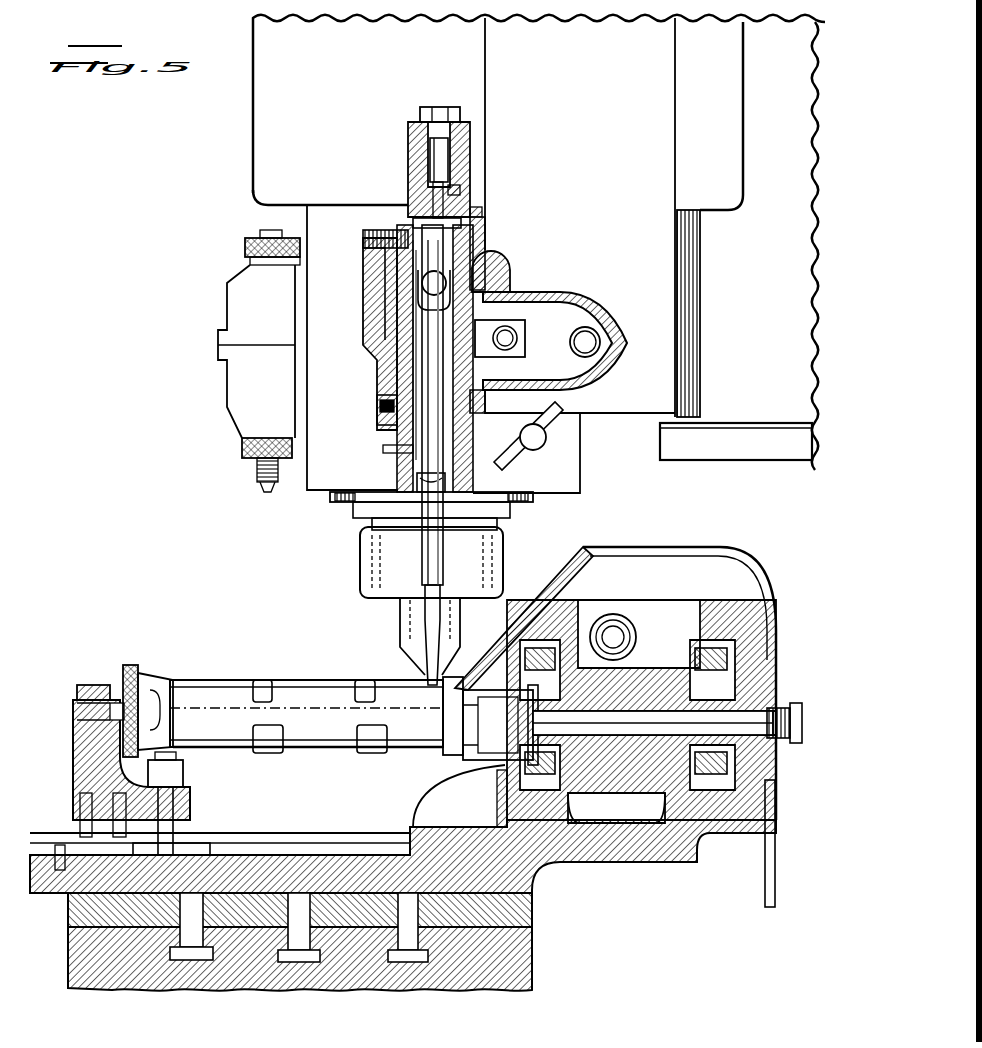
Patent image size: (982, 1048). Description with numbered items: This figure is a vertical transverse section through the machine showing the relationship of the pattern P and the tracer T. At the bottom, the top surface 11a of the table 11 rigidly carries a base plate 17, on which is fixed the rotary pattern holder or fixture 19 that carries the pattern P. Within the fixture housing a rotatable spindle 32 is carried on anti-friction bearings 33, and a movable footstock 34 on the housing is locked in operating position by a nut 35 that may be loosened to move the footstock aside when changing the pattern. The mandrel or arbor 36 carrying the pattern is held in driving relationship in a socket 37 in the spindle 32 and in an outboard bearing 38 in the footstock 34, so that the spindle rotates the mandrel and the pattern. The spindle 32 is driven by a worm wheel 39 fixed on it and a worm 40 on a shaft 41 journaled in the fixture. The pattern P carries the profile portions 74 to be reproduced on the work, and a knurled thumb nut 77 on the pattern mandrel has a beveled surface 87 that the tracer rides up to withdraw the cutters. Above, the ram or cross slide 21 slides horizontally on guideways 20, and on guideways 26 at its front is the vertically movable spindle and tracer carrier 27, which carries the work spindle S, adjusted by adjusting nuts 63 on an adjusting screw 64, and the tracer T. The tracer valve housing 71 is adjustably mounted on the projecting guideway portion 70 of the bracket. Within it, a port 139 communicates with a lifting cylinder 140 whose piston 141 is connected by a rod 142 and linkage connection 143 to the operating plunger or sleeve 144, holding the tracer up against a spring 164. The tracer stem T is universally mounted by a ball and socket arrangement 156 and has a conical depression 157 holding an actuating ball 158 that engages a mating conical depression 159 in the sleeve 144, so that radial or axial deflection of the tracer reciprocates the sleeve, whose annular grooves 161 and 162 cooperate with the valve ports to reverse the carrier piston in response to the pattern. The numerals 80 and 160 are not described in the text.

The table 11 is at (520, 968).
The top surface of the table 11a is at (299, 927).
The base plate 17 is at (520, 925).
The rotary pattern holder or fixture 19 is at (403, 856).
The guideways 20 is at (755, 450).
The ram or cross slide 21 is at (784, 246).
The guideways 26 is at (688, 397).
The spindle and tracer carrier 27 is at (262, 172).
The rotatable spindle 32 is at (667, 731).
The anti-friction bearings 33 is at (540, 648).
The footstock 34 is at (73, 757).
The nut 35 is at (185, 780).
The mandrel or arbor 36 is at (312, 700).
The socket 37 is at (520, 700).
The outboard bearing 38 is at (88, 685).
The worm wheel 39 is at (616, 808).
The worm 40 is at (615, 612).
The shaft 41 is at (612, 612).
The adjusting nuts 63 is at (245, 243).
The adjusting screw 64 is at (257, 470).
The projecting guideway portion 70 is at (542, 293).
The tracer valve housing 71 is at (483, 425).
The pattern portions 74 is at (261, 683).
The knurled thumb nut 77 is at (130, 665).
The support bar 80 is at (230, 750).
The beveled surface 87 is at (148, 673).
The port 139 is at (458, 190).
The lifting cylinder 140 is at (410, 186).
The piston 141 is at (428, 157).
The rod 142 is at (432, 200).
The linkage connection 143 is at (413, 223).
The operating plunger or sleeve 144 is at (378, 405).
The ball and socket arrangement 156 is at (415, 482).
The conical depression 157 is at (418, 296).
The actuating ball 158 is at (421, 283).
The conical depression 159 is at (486, 258).
The dome 160 is at (508, 273).
The annular groove 161 is at (378, 338).
The annular groove 162 is at (398, 384).
The spring 164 is at (422, 124).
The pattern P is at (208, 690).
The work spindle S is at (360, 574).
The tracer T is at (424, 559).